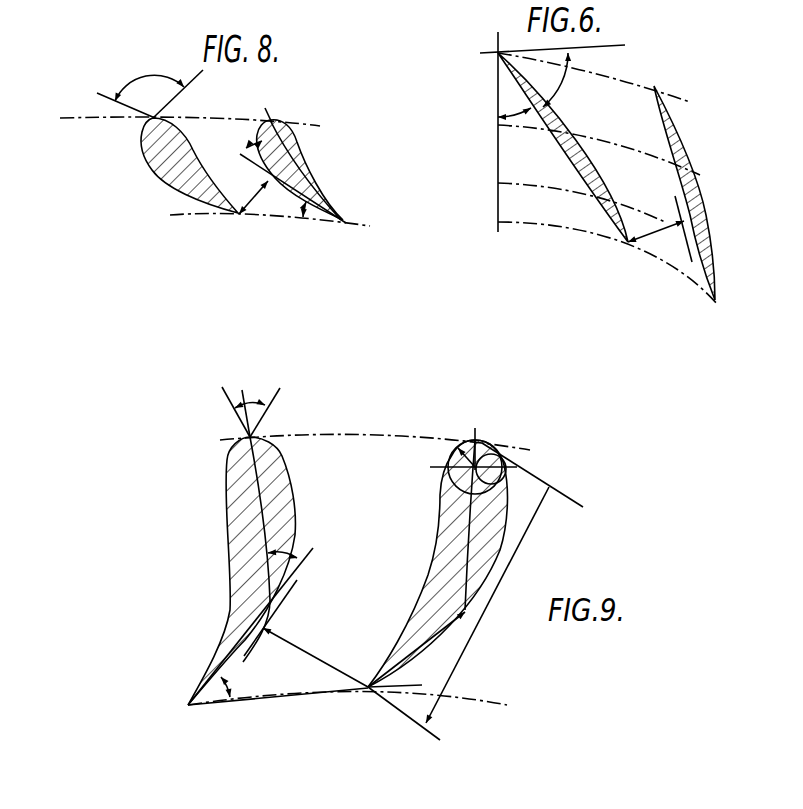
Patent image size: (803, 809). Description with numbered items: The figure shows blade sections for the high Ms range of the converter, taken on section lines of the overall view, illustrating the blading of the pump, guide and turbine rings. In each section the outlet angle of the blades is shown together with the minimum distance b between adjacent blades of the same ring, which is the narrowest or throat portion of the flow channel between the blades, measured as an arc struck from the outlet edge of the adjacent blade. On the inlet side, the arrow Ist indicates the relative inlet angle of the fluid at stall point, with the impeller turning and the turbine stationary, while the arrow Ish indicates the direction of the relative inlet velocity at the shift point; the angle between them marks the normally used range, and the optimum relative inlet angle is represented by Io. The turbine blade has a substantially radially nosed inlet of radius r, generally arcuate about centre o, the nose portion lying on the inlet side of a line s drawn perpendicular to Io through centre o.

In FIG. 8, the relative inlet velocity direction at shift point Ish is at (112, 110).
In FIG. 9, the relative inlet velocity direction at shift point Ish is at (268, 412).
In FIG. 8, the relative inlet angle at stall point Ist is at (186, 98).
In FIG. 9, the relative inlet angle at stall point Ist is at (223, 412).
In FIG. 8, the optimum relative inlet angle Io is at (273, 116).
In FIG. 9, the optimum relative inlet angle Io is at (243, 390).
In FIG. 8, the minimum distance between adjacent blades b is at (255, 190).
In FIG. 6, the minimum distance between adjacent blades b is at (655, 230).
In FIG. 9, the minimum distance between adjacent blades b is at (312, 653).
In FIG. 9, the radius of the blade nose r is at (452, 464).
In FIG. 9, the line s is at (440, 468).
In FIG. 9, the centre of nose arc o is at (503, 481).